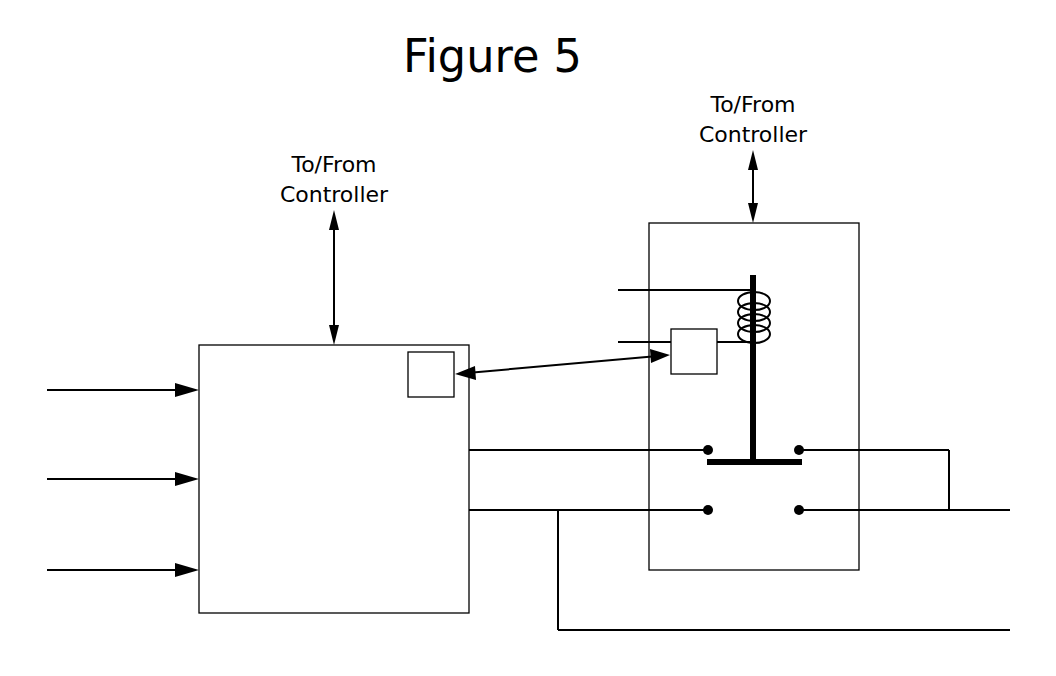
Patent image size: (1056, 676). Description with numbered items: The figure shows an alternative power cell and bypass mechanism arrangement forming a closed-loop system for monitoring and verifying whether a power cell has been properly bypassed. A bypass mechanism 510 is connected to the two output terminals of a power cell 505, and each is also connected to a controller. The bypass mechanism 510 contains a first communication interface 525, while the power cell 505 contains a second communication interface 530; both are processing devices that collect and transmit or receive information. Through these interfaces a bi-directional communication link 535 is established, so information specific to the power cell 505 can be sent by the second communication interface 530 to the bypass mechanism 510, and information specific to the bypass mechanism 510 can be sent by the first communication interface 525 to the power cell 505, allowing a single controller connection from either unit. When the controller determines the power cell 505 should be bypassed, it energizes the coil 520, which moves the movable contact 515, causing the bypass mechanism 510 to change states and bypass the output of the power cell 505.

The power cell 505 is at (258, 344).
The bypass mechanism 510 is at (709, 223).
The movable contact 515 is at (753, 480).
The coil 520 is at (783, 317).
The first communication interface 525 is at (695, 367).
The second communication interface 530 is at (428, 352).
The bi-directional communication link 535 is at (532, 363).